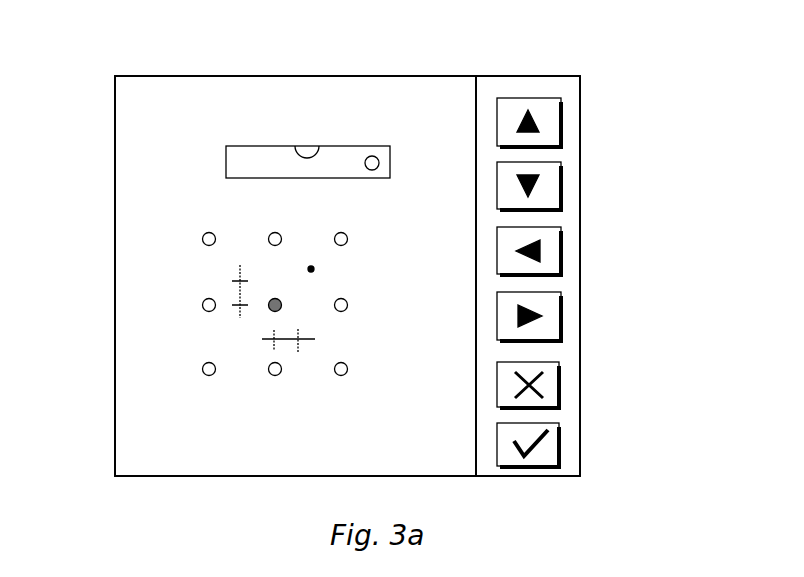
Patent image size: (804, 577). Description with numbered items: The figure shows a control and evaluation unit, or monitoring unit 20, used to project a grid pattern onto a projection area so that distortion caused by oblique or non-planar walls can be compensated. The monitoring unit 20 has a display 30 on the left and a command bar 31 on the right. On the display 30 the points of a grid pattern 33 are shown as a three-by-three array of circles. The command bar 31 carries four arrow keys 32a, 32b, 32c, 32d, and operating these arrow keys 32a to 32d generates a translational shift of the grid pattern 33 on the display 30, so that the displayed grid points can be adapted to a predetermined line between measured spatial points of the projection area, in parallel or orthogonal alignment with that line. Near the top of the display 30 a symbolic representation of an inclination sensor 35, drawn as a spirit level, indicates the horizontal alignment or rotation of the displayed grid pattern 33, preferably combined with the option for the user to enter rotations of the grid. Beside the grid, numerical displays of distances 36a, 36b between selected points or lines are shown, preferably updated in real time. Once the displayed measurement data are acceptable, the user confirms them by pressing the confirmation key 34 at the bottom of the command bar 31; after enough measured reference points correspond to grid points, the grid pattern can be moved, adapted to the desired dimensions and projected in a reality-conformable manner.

The monitoring unit 20 is at (347, 60).
The display 30 is at (285, 108).
The command bar 31 is at (533, 85).
The arrow key 32a is at (542, 120).
The arrow key 32b is at (542, 187).
The arrow key 32c is at (542, 250).
The arrow key 32d is at (545, 315).
The grid pattern 33 is at (205, 342).
The confirmation key 34 is at (545, 452).
The inclination sensor 35 is at (249, 158).
The distance 36a is at (236, 290).
The distance 36b is at (271, 341).